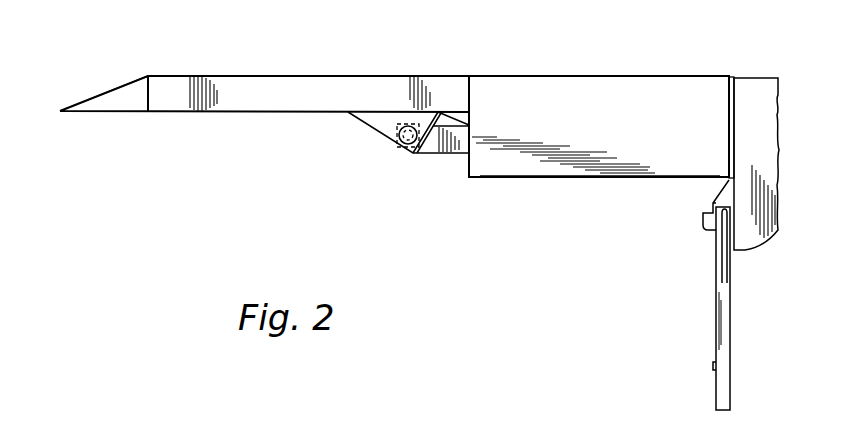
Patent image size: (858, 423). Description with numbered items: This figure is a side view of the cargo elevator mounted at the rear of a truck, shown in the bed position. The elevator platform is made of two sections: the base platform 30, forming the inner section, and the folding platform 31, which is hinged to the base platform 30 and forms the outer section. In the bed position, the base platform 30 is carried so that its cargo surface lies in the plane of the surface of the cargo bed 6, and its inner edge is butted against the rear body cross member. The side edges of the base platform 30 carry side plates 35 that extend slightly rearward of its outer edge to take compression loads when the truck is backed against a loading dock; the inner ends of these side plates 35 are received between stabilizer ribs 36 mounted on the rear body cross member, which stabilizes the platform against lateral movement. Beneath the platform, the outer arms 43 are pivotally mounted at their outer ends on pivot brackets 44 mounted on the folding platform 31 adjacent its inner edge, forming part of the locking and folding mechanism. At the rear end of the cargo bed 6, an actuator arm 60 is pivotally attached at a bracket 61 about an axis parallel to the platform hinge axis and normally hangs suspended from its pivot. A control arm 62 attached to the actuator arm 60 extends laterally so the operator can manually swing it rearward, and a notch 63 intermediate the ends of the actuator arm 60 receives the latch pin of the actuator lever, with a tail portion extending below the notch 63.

The cargo bed 6 is at (768, 110).
The base platform 30 is at (610, 76).
The folding platform 31 is at (356, 76).
The side plates 35 is at (587, 176).
The stabilizer ribs 36 is at (730, 108).
The outer arms 43 is at (440, 155).
The pivot brackets 44 is at (378, 124).
The actuator arm 60 is at (731, 325).
The bracket 61 is at (703, 215).
The control arm 62 is at (718, 262).
The notch 63 is at (716, 365).